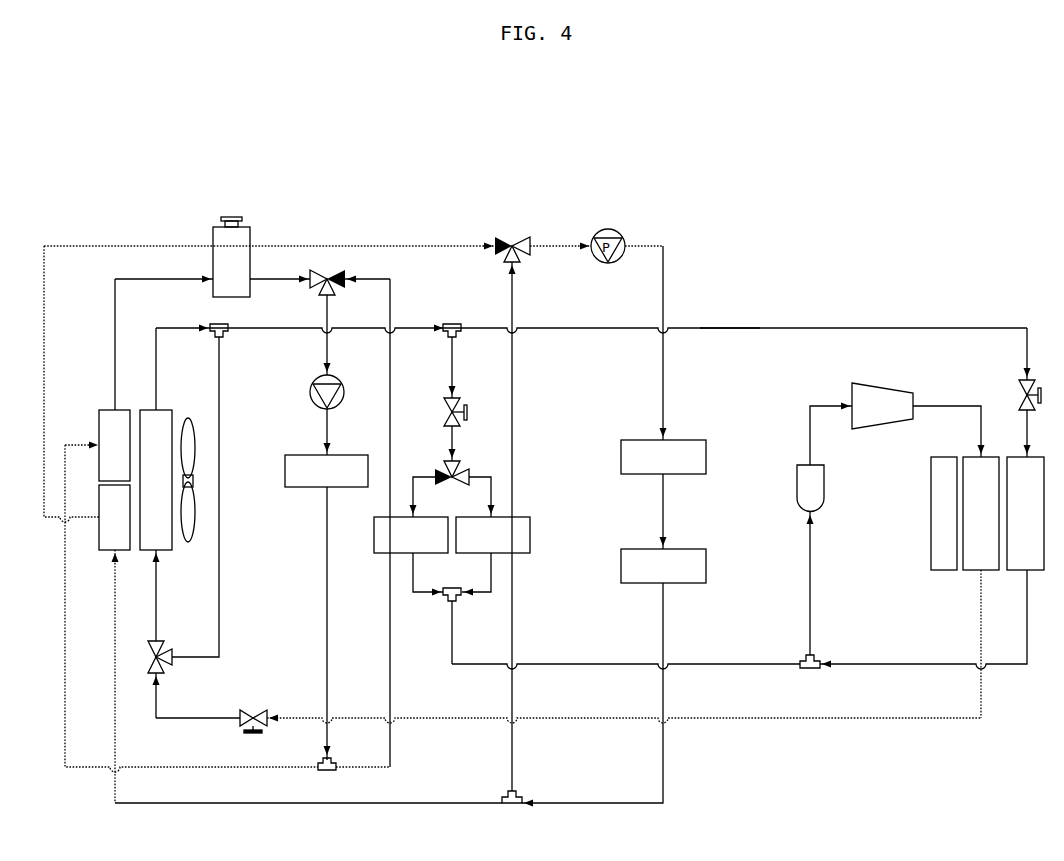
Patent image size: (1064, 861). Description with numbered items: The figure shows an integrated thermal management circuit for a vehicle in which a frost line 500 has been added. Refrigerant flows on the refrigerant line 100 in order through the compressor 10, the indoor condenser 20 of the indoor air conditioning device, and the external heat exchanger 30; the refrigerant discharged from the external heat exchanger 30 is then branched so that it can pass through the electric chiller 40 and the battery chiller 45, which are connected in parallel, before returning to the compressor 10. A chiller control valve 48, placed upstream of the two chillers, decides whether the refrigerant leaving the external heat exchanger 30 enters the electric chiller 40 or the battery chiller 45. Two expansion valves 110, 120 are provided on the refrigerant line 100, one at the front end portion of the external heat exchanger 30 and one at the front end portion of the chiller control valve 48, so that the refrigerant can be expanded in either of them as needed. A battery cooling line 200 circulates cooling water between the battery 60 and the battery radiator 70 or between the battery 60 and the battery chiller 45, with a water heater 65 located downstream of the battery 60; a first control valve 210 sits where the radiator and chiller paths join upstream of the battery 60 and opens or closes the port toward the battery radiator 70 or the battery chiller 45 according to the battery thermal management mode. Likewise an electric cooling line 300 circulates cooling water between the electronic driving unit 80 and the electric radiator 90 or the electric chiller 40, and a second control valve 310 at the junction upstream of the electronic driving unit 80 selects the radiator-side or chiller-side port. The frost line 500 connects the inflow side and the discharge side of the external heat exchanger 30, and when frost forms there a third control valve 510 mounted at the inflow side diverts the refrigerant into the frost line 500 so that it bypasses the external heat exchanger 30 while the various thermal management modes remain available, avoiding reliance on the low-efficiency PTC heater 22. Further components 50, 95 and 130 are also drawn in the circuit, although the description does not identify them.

The compressor 10 is at (892, 390).
The indoor condenser 20 is at (968, 572).
The PTC heater 22 is at (930, 541).
The external heat exchanger 30 is at (170, 553).
The electric chiller 40 is at (378, 555).
The battery chiller 45 is at (532, 537).
The chiller control valve 48 is at (463, 470).
The water-cooled condenser 50 is at (1013, 572).
The battery 60 is at (708, 458).
The water heater 65 is at (708, 566).
The battery radiator 70 is at (107, 553).
The electronic driving unit 80 is at (298, 455).
The electric radiator 90 is at (106, 408).
The reservoir tank 95 is at (213, 232).
The refrigerant line 100 is at (748, 327).
The expansion valve 110 is at (250, 710).
The expansion valve 120 is at (457, 396).
The expansion valve 130 is at (1017, 393).
The battery cooling line 200 is at (665, 380).
The first control valve 210 is at (514, 238).
The electric cooling line 300 is at (326, 580).
The second control valve 310 is at (329, 270).
The frost line 500 is at (222, 520).
The third control valve 510 is at (166, 662).